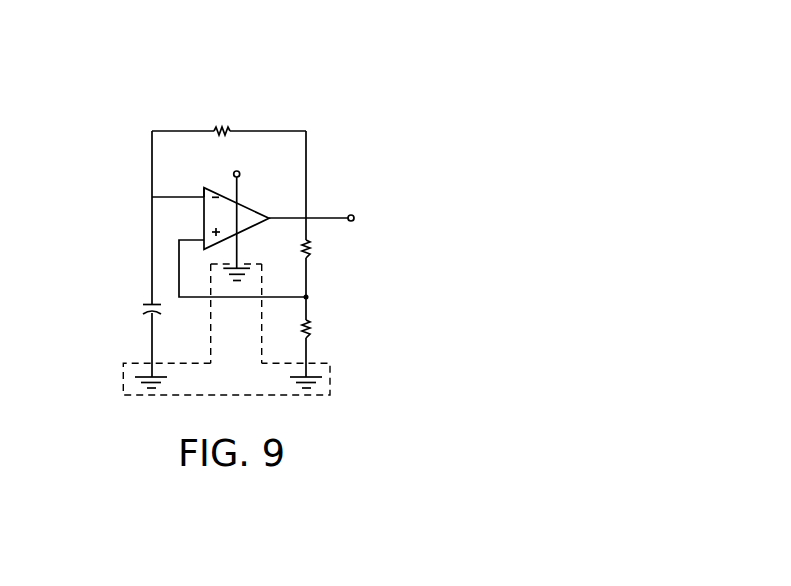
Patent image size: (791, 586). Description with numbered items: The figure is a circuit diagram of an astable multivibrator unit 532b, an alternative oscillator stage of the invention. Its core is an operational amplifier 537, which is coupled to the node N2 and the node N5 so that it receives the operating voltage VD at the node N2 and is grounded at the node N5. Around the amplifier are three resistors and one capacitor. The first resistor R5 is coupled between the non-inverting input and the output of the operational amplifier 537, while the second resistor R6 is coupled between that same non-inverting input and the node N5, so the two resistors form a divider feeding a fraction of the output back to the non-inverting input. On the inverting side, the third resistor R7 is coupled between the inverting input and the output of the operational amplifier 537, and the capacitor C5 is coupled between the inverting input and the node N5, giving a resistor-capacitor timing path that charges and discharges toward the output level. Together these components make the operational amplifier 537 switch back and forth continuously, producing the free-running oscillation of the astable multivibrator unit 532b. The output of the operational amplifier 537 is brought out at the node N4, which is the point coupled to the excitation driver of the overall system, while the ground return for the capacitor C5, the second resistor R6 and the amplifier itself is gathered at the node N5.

The astable multivibrator unit 532b is at (369, 126).
The operational amplifier 537 is at (253, 207).
The third resistor R7 is at (223, 116).
The first resistor R5 is at (323, 251).
The second resistor R6 is at (323, 331).
The capacitor C5 is at (136, 309).
The node N2 is at (236, 214).
The node N4 is at (368, 218).
The node N5 is at (248, 384).
The operating voltage VD is at (206, 179).